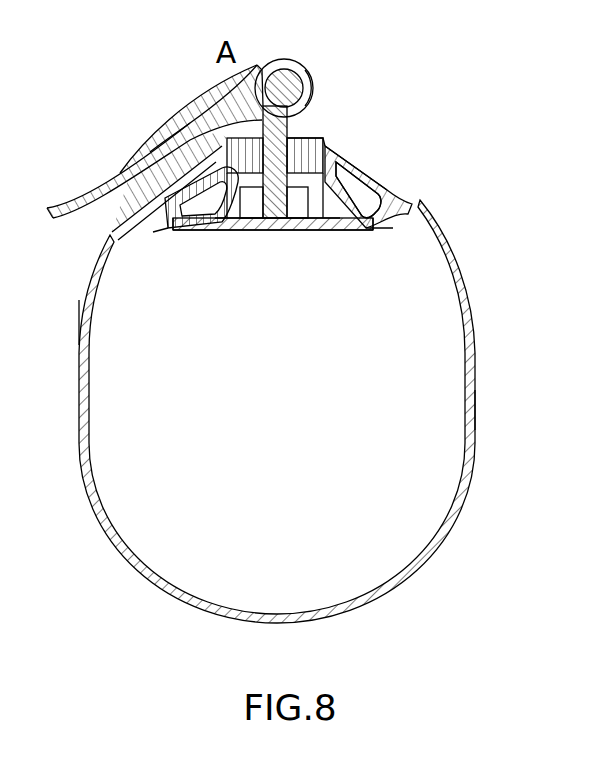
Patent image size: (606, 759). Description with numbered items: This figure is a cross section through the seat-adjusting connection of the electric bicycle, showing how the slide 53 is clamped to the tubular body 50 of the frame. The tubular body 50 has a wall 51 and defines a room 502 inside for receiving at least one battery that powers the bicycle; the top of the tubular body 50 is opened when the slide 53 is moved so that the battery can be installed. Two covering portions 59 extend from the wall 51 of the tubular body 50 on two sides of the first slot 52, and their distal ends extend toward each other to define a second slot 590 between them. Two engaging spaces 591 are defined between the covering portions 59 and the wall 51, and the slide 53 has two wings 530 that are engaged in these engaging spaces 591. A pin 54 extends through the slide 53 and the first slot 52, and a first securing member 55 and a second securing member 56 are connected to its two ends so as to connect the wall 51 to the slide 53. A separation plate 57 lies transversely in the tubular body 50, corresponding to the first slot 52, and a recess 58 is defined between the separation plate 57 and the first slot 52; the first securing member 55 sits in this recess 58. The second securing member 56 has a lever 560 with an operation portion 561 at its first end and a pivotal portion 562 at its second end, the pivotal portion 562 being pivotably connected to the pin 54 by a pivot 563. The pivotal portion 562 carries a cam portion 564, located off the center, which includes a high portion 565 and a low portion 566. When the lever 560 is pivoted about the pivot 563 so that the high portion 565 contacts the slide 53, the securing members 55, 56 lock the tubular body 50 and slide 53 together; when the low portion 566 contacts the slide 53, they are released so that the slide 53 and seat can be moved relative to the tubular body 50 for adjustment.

The tubular body 50 is at (80, 421).
The wall 51 is at (82, 322).
The room 502 is at (446, 410).
The first slot 52 is at (378, 160).
The slide 53 is at (215, 125).
The pin 54 is at (250, 234).
The first securing member 55 is at (220, 232).
The second securing member 56 is at (250, 74).
The separation plate 57 is at (296, 232).
The recess 58 is at (325, 232).
The covering portions 59 is at (180, 153).
The wings 530 is at (180, 232).
The lever 560 is at (190, 137).
The operation portion 561 is at (128, 180).
The pivotal portion 562 is at (267, 70).
The pivot 563 is at (291, 84).
The cam portion 564 is at (312, 94).
The high portion 565 is at (318, 148).
The low portion 566 is at (283, 78).
The second slot 590 is at (330, 152).
The engaging spaces 591 is at (153, 232).